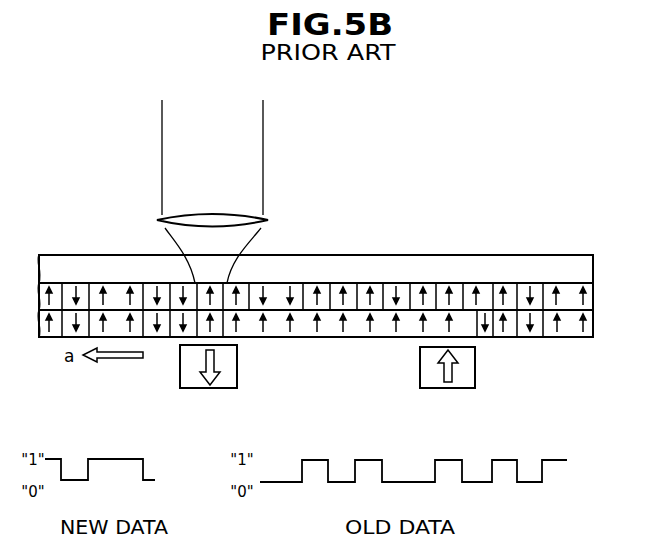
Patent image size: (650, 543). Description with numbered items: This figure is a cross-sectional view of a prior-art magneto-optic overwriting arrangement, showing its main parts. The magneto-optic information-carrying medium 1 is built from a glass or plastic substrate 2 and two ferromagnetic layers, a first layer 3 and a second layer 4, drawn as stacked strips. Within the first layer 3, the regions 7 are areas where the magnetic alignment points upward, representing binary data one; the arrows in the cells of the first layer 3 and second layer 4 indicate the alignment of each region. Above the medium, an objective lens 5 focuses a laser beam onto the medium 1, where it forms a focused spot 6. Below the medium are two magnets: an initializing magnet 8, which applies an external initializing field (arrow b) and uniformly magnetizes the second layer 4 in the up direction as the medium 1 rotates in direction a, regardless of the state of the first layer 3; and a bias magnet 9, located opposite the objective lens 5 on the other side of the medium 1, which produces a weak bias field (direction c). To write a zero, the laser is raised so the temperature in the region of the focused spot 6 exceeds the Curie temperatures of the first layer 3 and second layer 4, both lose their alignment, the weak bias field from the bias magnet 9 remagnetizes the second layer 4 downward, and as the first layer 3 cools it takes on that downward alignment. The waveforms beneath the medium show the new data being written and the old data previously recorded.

The magneto-optic information-carrying medium 1 is at (484, 256).
The substrate 2 is at (593, 257).
The first layer 3 is at (593, 296).
The second layer 4 is at (593, 337).
The objective lens 5 is at (268, 220).
The focused spot 6 is at (229, 283).
The regions of upward magnetic alignment 7 is at (106, 283).
The initializing magnet 8 is at (448, 388).
The bias magnet 9 is at (200, 388).